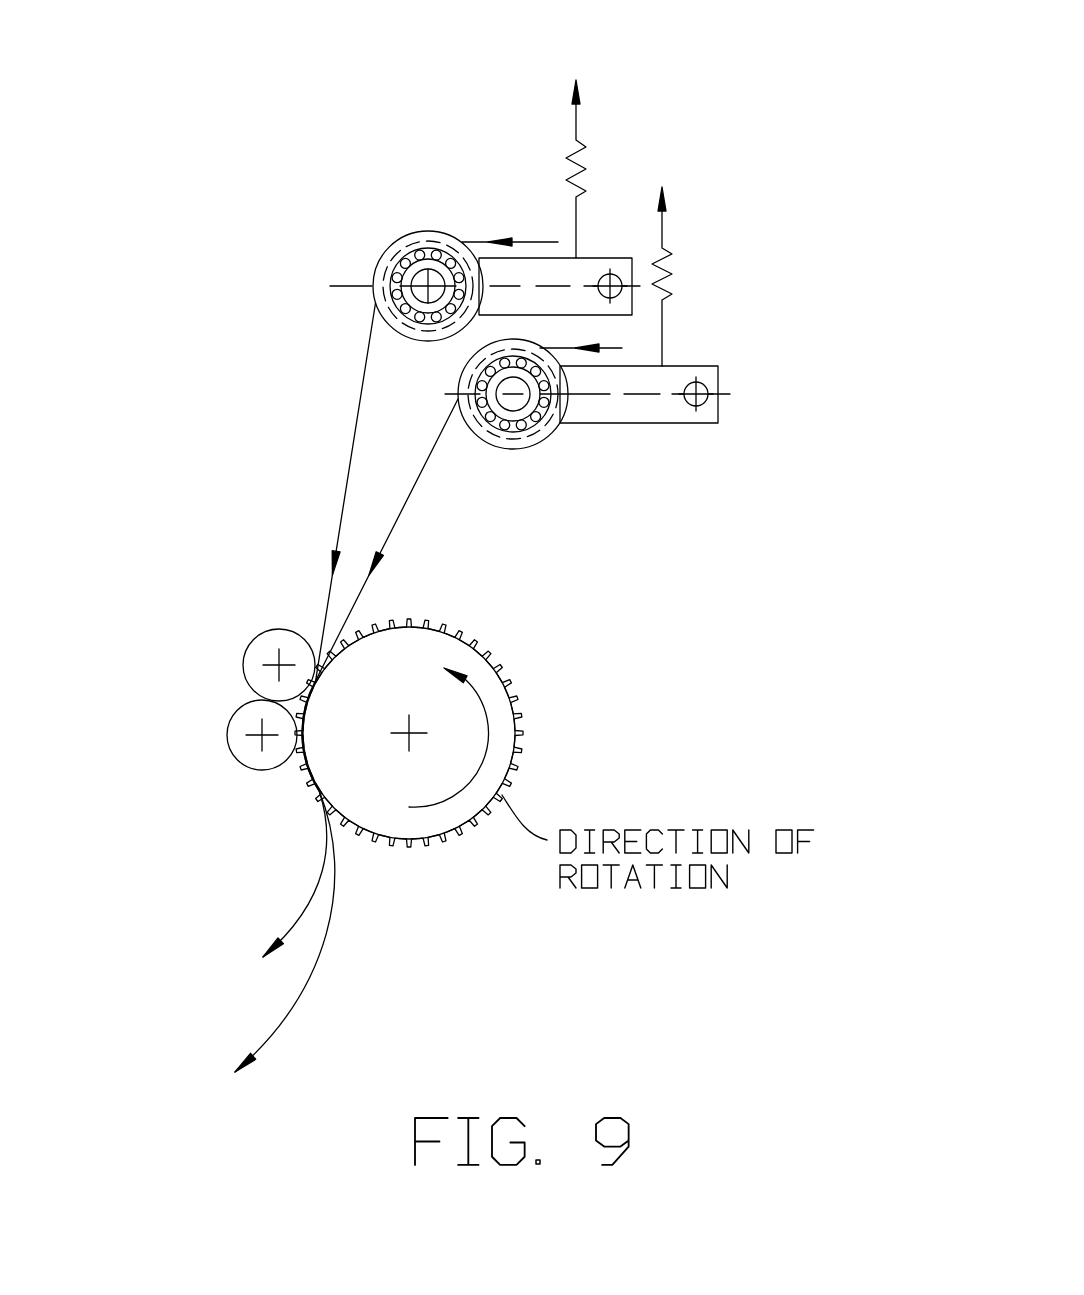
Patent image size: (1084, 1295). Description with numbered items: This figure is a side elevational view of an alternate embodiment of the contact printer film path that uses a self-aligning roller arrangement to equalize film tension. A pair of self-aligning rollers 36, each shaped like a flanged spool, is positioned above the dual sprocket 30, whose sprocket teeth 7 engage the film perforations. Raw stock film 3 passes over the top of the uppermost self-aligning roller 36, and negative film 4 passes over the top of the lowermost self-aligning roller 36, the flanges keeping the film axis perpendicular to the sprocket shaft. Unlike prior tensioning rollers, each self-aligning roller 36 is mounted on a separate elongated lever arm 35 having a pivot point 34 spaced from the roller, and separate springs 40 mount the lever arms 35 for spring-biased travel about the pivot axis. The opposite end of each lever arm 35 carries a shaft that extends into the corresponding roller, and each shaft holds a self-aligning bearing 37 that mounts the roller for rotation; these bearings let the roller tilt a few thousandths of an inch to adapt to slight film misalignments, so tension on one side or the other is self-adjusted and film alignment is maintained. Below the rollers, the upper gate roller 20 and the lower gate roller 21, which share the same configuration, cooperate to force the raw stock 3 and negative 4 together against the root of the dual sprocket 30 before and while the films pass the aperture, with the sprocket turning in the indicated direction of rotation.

The raw stock film 3 is at (478, 240).
The negative film 4 is at (397, 528).
The sprocket teeth 7 is at (408, 842).
The upper gate roller 20 is at (243, 655).
The lower gate roller 21 is at (228, 752).
The dual sprocket 30 is at (570, 698).
The pivot point 34 is at (617, 280).
The elongated lever arm 35 is at (548, 258).
The self-aligning roller 36 is at (400, 231).
The self-aligning bearing 37 is at (397, 277).
The spring 40 is at (587, 138).